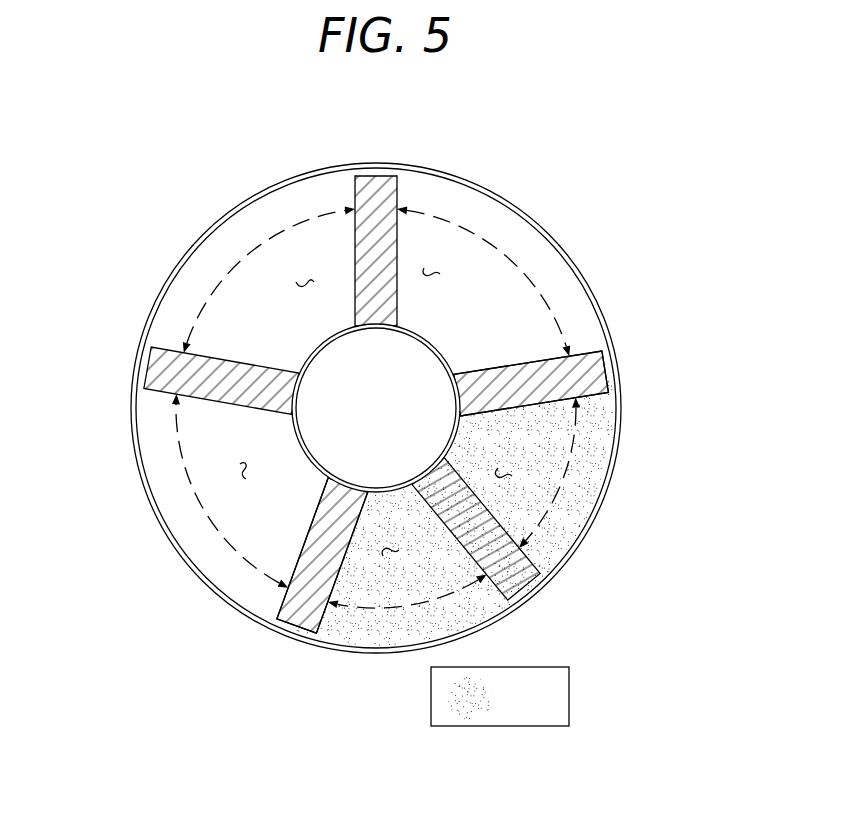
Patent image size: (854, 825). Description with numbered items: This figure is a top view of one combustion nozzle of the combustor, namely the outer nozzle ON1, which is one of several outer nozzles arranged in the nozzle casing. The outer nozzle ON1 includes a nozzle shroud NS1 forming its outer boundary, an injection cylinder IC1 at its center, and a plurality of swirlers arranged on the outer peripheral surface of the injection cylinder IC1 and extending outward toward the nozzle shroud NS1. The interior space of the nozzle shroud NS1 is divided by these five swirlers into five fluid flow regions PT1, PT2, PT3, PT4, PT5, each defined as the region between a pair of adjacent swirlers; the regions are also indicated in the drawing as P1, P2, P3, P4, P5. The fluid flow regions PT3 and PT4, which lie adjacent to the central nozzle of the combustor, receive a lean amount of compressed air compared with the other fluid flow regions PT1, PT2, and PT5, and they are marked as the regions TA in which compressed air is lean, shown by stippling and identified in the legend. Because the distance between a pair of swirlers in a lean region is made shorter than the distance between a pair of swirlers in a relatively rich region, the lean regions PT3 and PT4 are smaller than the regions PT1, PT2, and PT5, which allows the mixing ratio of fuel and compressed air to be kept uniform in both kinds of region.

The outer nozzle ON1 is at (184, 91).
The nozzle shroud NS1 is at (523, 218).
The injection cylinder IC1 is at (437, 347).
The first portion P1 is at (269, 279).
The second portion P2 is at (230, 491).
The third portion P3 is at (407, 592).
The fourth portion P4 is at (549, 473).
The fifth portion P5 is at (483, 281).
The fluid flow region PT1 is at (308, 279).
The fluid flow region PT2 is at (240, 464).
The fluid flow region PT3 is at (383, 556).
The fluid flow region PT4 is at (500, 473).
The fluid flow region PT5 is at (432, 272).
The lean compressed air region TA is at (590, 463).